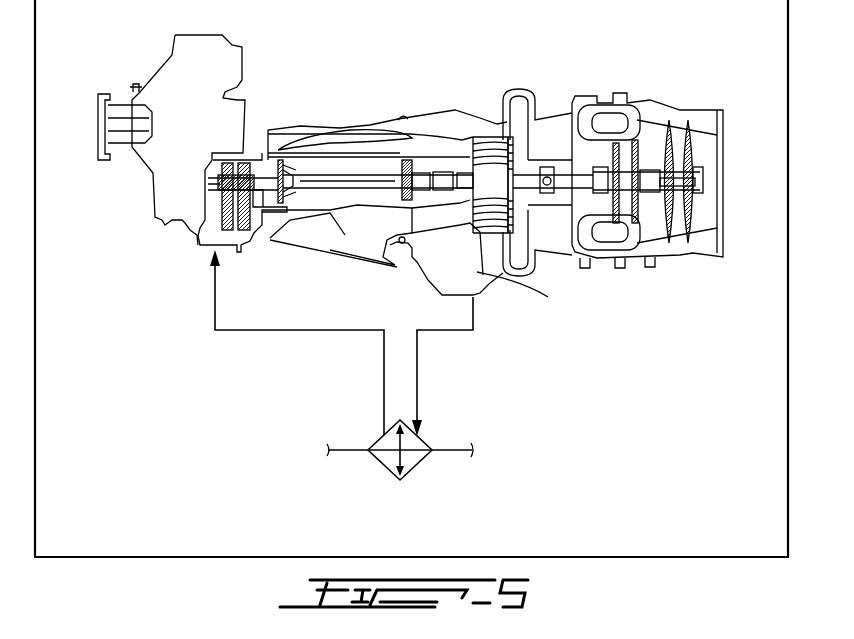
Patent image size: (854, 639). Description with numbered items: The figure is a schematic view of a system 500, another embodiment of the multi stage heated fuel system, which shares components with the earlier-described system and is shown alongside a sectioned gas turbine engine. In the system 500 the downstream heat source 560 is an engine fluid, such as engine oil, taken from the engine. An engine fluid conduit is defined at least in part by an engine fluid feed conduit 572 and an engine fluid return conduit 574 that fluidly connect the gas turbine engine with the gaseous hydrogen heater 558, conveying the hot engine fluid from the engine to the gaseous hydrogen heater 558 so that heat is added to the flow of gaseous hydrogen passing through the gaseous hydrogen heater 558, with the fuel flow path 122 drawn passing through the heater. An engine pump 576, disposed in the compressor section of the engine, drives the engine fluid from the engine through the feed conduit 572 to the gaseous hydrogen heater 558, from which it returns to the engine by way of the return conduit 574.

The system 500 is at (412, 148).
The downstream heat source 560 is at (468, 85).
The engine pump 576 is at (467, 282).
The engine fluid return conduit 574 is at (216, 292).
The engine fluid feed conduit 572 is at (443, 330).
The gaseous hydrogen heater 558 is at (438, 437).
The fuel line 122 is at (333, 450).